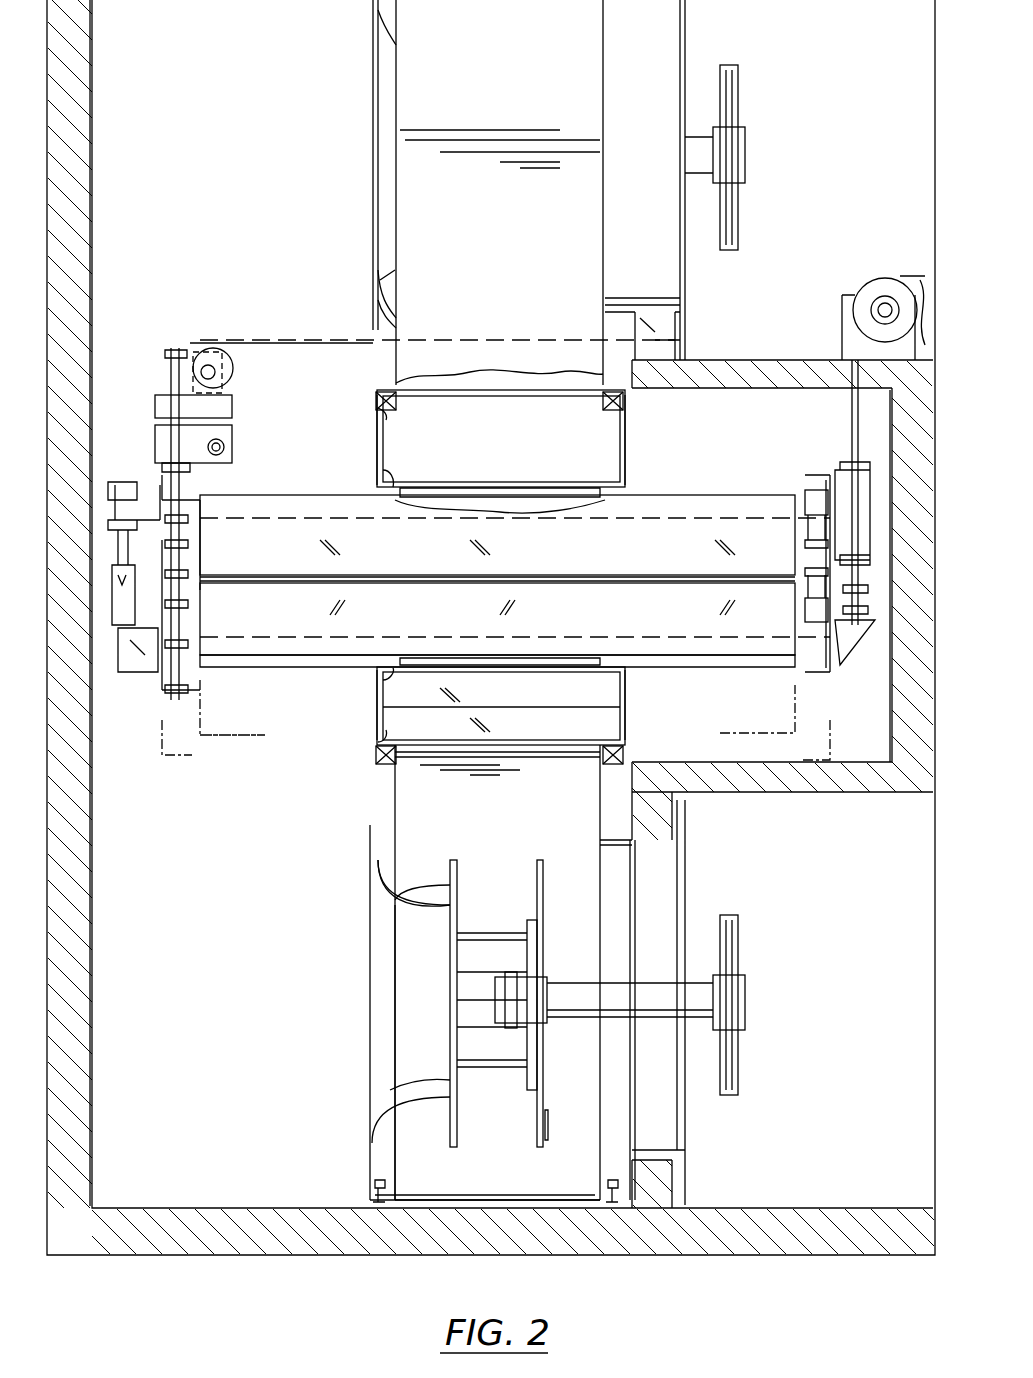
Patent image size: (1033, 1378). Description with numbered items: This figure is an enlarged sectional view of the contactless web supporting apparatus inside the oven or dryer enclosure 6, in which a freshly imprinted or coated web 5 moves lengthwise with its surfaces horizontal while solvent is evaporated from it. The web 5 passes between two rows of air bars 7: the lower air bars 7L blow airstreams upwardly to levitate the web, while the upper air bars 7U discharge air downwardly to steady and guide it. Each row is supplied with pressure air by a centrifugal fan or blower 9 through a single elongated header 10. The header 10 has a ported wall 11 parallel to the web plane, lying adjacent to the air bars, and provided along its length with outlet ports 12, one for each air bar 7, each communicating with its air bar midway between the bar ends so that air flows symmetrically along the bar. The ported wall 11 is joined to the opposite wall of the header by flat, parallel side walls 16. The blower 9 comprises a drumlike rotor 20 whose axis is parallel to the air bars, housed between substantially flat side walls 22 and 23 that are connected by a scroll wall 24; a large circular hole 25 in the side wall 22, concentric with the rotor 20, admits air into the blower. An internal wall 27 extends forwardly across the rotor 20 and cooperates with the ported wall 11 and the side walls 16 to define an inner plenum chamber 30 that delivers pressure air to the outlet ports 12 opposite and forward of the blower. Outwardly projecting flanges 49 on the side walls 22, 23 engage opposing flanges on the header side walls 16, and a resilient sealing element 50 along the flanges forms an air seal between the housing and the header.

The web 5 is at (530, 575).
The oven or dryer enclosure 6 is at (216, 1248).
The air bar 7 is at (710, 495).
The upper air bar 7U is at (515, 535).
The lower air bar 7L is at (515, 625).
The centrifugal fan or blower 9 is at (350, 170).
The header 10 is at (628, 425).
The ported wall 11 is at (383, 470).
The outlet port 12 is at (405, 490).
The header side wall 16 is at (377, 440).
The blower rotor 20 is at (510, 860).
The blower housing side wall 22 is at (398, 797).
The blower housing side wall 23 is at (598, 795).
The scroll wall 24 is at (456, 1200).
The circular hole 25 is at (400, 890).
The internal wall 27 is at (590, 742).
The inner plenum chamber 30 is at (514, 685).
The outwardly projecting flange 49 is at (378, 412).
The resilient sealing element 50 is at (383, 400).